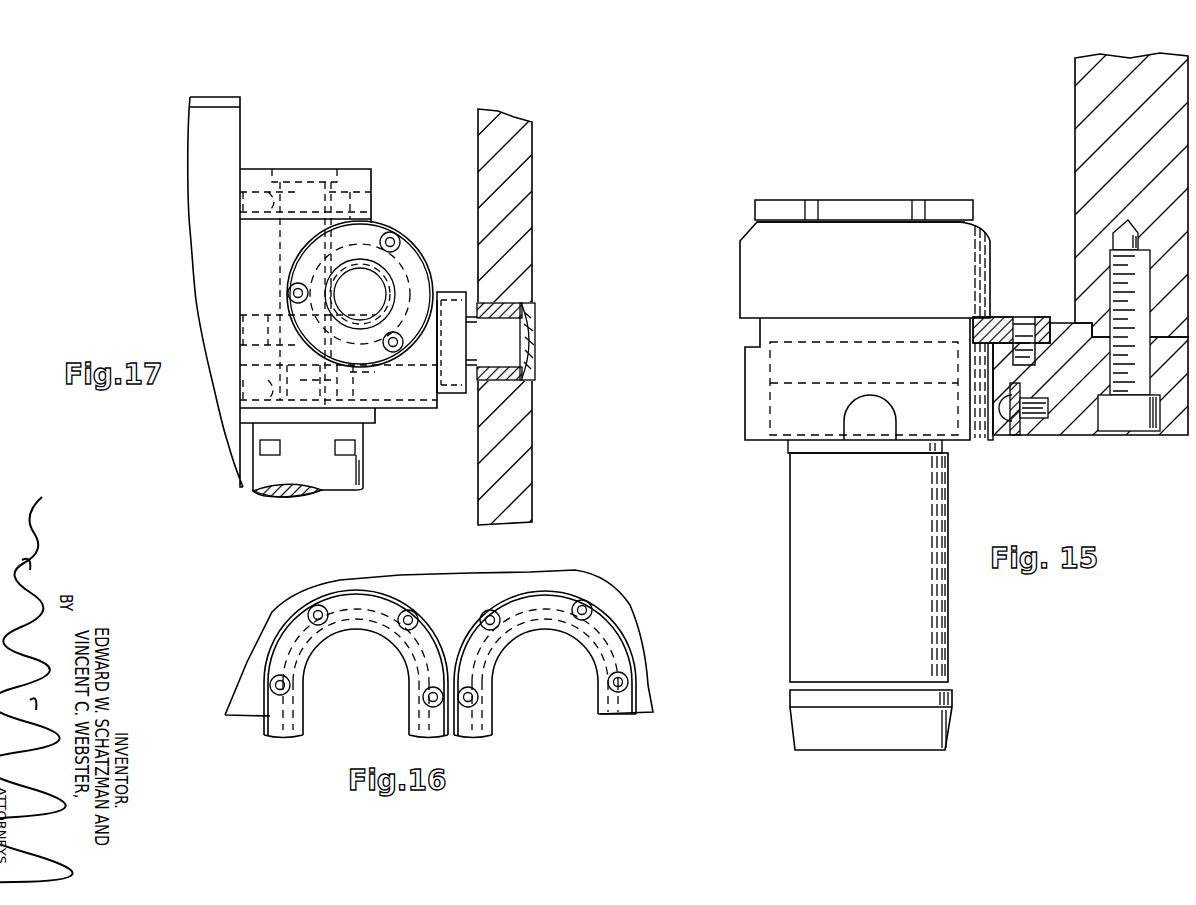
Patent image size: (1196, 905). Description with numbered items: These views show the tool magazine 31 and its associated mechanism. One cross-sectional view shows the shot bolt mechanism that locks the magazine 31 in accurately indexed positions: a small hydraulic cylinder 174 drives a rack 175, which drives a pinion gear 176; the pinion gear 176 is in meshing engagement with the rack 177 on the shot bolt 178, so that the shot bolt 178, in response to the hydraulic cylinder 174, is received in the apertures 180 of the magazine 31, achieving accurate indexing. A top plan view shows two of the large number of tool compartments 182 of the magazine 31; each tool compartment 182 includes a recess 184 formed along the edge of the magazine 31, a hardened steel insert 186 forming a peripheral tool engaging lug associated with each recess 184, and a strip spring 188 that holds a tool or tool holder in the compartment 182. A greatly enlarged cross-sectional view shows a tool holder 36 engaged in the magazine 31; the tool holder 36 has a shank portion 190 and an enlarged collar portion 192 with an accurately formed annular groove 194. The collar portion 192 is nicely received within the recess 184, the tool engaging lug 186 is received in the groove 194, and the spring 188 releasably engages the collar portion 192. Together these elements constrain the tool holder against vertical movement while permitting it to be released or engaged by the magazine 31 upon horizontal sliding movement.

In FIG. 15, the tool magazine 31 is at (1072, 172).
In FIG. 15, the tool holder 36 is at (860, 601).
In FIG. 17, the hydraulic cylinder 174 is at (276, 478).
In FIG. 17, the rack 175 is at (322, 205).
In FIG. 17, the pinion gear 176 is at (328, 280).
In FIG. 17, the rack 177 is at (429, 271).
In FIG. 17, the shot bolt 178 is at (484, 352).
In FIG. 17, the apertures 180 is at (498, 323).
In FIG. 16, the tool compartment 182 is at (544, 707).
In FIG. 15, the recess 184 is at (998, 350).
In FIG. 16, the recess 184 is at (518, 615).
In FIG. 15, the hardened steel insert 186 is at (998, 318).
In FIG. 16, the hardened steel insert 186 is at (285, 647).
In FIG. 15, the strip spring 188 is at (1014, 436).
In FIG. 16, the strip spring 188 is at (407, 722).
In FIG. 15, the shank portion 190 is at (920, 630).
In FIG. 15, the collar portion 192 is at (757, 271).
In FIG. 15, the annular groove 194 is at (747, 322).